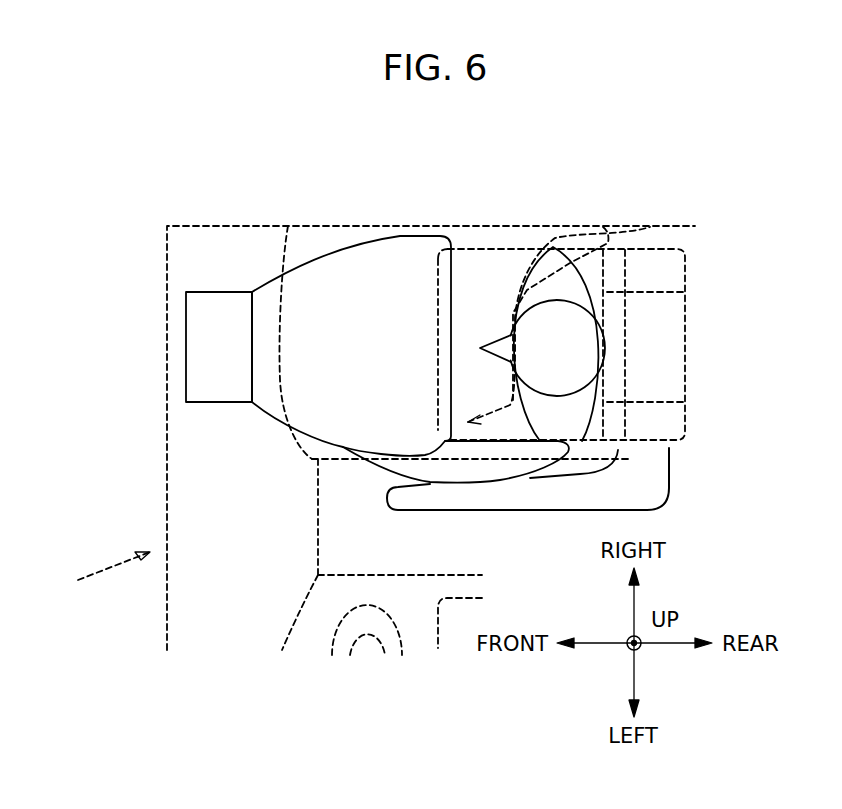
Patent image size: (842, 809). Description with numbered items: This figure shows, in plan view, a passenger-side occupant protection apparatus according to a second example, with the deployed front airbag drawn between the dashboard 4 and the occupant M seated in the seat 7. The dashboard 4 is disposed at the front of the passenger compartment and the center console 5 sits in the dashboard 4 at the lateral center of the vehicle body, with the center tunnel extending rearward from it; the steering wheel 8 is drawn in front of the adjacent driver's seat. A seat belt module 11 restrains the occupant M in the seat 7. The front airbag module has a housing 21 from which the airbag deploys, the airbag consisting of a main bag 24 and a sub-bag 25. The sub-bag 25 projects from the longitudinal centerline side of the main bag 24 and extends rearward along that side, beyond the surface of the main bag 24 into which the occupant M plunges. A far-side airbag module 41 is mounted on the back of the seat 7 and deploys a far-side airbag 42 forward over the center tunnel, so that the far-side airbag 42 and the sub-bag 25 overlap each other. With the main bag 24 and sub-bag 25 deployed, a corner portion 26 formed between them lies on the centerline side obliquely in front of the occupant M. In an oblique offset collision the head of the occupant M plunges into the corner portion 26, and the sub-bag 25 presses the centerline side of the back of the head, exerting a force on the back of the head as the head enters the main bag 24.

The dashboard 4 is at (205, 422).
The center console 5 is at (300, 497).
The seat 7 is at (667, 270).
The steering wheel 8 is at (350, 615).
The seat belt module 11 is at (603, 227).
The housing 21 is at (228, 292).
The main bag 24 is at (360, 265).
The sub-bag 25 is at (455, 468).
The corner portion 26 is at (462, 438).
The far-side airbag module 41 is at (568, 510).
The far-side airbag 42 is at (618, 502).
The occupant M is at (558, 315).